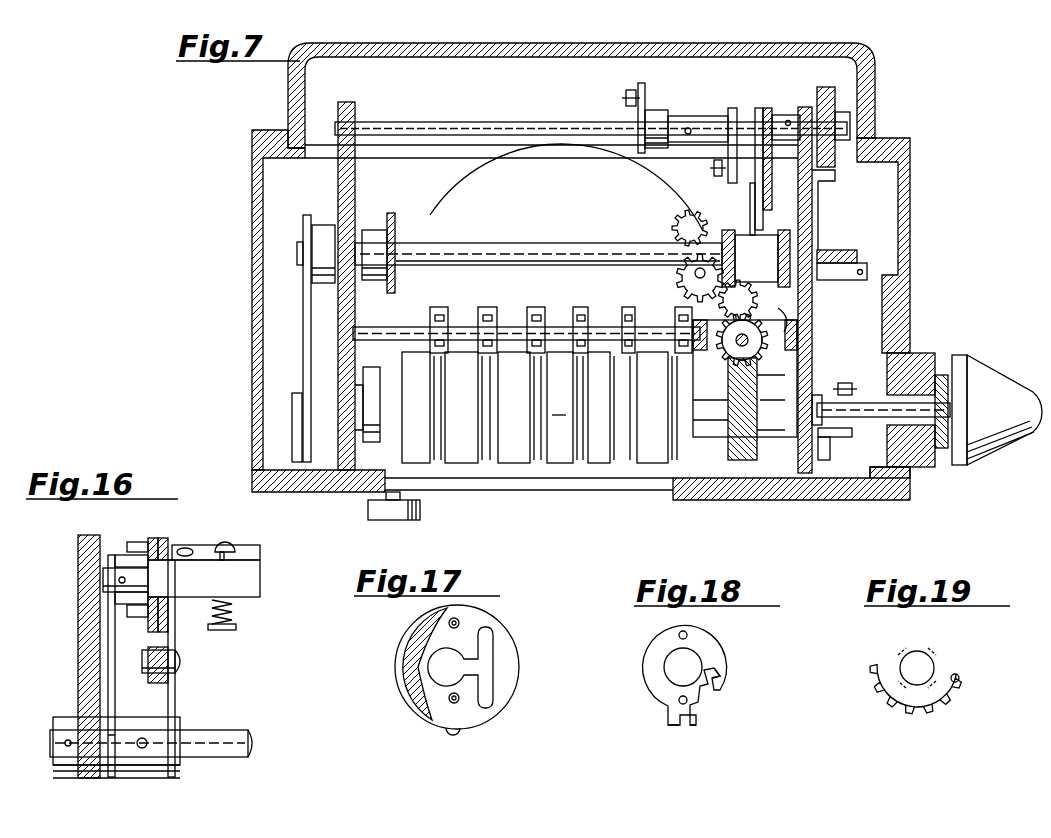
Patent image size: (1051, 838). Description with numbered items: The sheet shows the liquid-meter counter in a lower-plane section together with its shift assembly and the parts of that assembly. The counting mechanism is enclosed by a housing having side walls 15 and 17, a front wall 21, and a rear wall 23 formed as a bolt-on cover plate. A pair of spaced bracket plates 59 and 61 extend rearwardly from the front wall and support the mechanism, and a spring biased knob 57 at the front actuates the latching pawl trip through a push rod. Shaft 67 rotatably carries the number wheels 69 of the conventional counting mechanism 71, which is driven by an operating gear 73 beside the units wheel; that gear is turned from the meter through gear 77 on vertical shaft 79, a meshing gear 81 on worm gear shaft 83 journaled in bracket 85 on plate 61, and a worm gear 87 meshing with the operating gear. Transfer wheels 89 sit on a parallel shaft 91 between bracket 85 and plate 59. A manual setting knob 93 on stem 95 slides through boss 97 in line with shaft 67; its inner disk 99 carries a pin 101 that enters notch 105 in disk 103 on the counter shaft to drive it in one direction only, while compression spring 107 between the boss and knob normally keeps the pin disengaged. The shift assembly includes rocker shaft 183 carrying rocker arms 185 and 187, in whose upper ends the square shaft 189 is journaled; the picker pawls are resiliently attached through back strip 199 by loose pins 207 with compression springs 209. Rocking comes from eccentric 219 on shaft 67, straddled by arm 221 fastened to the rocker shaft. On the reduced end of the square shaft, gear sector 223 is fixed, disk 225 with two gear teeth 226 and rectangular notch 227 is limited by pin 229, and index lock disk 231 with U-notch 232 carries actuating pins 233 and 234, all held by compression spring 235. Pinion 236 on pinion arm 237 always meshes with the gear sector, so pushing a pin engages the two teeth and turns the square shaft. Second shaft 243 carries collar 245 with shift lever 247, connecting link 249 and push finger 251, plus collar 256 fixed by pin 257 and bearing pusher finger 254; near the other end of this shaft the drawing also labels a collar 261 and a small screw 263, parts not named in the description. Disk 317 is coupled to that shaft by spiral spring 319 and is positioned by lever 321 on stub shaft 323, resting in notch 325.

In FIG. 7, the side wall 15 is at (252, 270).
In FIG. 7, the side wall 17 is at (911, 222).
In FIG. 7, the front wall 21 is at (765, 500).
In FIG. 7, the rear wall 23 is at (654, 43).
In FIG. 7, the spring biased knob 57 is at (382, 521).
In FIG. 7, the bracket plate 59 is at (338, 303).
In FIG. 7, the bracket plate 61 is at (806, 357).
In FIG. 16, the bracket plate 61 is at (78, 580).
In FIG. 7, the shaft 67 is at (370, 442).
In FIG. 7, the number wheels 69 is at (405, 370).
In FIG. 7, the counting mechanism 71 is at (561, 407).
In FIG. 7, the operating gear 73 is at (740, 440).
In FIG. 7, the gear 77 is at (685, 228).
In FIG. 7, the vertical shaft 79 is at (700, 282).
In FIG. 7, the gear 81 is at (738, 294).
In FIG. 7, the worm gear shaft 83 is at (745, 375).
In FIG. 7, the bracket 85 is at (780, 316).
In FIG. 7, the worm gear 87 is at (735, 346).
In FIG. 7, the transfer wheels 89 is at (432, 318).
In FIG. 7, the shaft 91 is at (383, 336).
In FIG. 7, the manual setting knob 93 is at (1000, 433).
In FIG. 7, the stem 95 is at (908, 405).
In FIG. 7, the boss 97 is at (921, 472).
In FIG. 7, the disk 99 is at (842, 384).
In FIG. 7, the pin 101 is at (840, 438).
In FIG. 7, the disk 103 is at (822, 446).
In FIG. 7, the notch 105 is at (818, 416).
In FIG. 7, the compression spring 107 is at (943, 378).
In FIG. 7, the rocker shaft 183 is at (484, 249).
In FIG. 16, the rocker shaft 183 is at (218, 738).
In FIG. 7, the rocker arm 185 is at (396, 231).
In FIG. 16, the rocker arm 185 is at (108, 640).
In FIG. 7, the rocker arm 187 is at (776, 249).
In FIG. 16, the square shaft 189 is at (252, 588).
In FIG. 16, the back strip 199 is at (262, 548).
In FIG. 16, the loose pins 207 is at (224, 545).
In FIG. 16, the compression spring 209 is at (232, 614).
In FIG. 7, the eccentric 219 is at (292, 421).
In FIG. 7, the arm 221 is at (303, 325).
In FIG. 16, the gear sector 223 is at (168, 545).
In FIG. 19, the gear sector 223 is at (940, 650).
In FIG. 16, the disk 225 is at (154, 538).
In FIG. 18, the disk 225 is at (710, 646).
In FIG. 18, the gear teeth 226 is at (670, 724).
In FIG. 18, the rectangular notch 227 is at (722, 680).
In FIG. 19, the pin 229 is at (960, 679).
In FIG. 16, the index lock disk 231 is at (140, 540).
In FIG. 17, the index lock disk 231 is at (500, 628).
In FIG. 17, the U-notch 232 is at (455, 730).
In FIG. 16, the actuating pin 233 is at (130, 543).
In FIG. 17, the actuating pin 233 is at (458, 620).
In FIG. 16, the actuating pin 234 is at (135, 618).
In FIG. 17, the actuating pin 234 is at (451, 702).
In FIG. 16, the compression spring 235 is at (150, 588).
In FIG. 16, the pinion 236 is at (155, 673).
In FIG. 7, the pinion arm 237 is at (722, 251).
In FIG. 16, the pinion arm 237 is at (170, 686).
In FIG. 7, the second shaft 243 is at (445, 128).
In FIG. 7, the collar 245 is at (734, 115).
In FIG. 7, the shift lever 247 is at (722, 150).
In FIG. 7, the connecting link 249 is at (718, 176).
In FIG. 7, the push finger 251 is at (757, 200).
In FIG. 7, the pusher finger 254 is at (770, 175).
In FIG. 7, the collar 256 is at (779, 110).
In FIG. 7, the pin 257 is at (790, 121).
In FIG. 7, the collar 261 is at (646, 106).
In FIG. 7, the screw 263 is at (634, 104).
In FIG. 7, the disk 317 is at (823, 92).
In FIG. 7, the spiral spring 319 is at (850, 126).
In FIG. 7, the lever 321 is at (820, 220).
In FIG. 7, the stub shaft 323 is at (836, 265).
In FIG. 7, the notch 325 is at (838, 178).